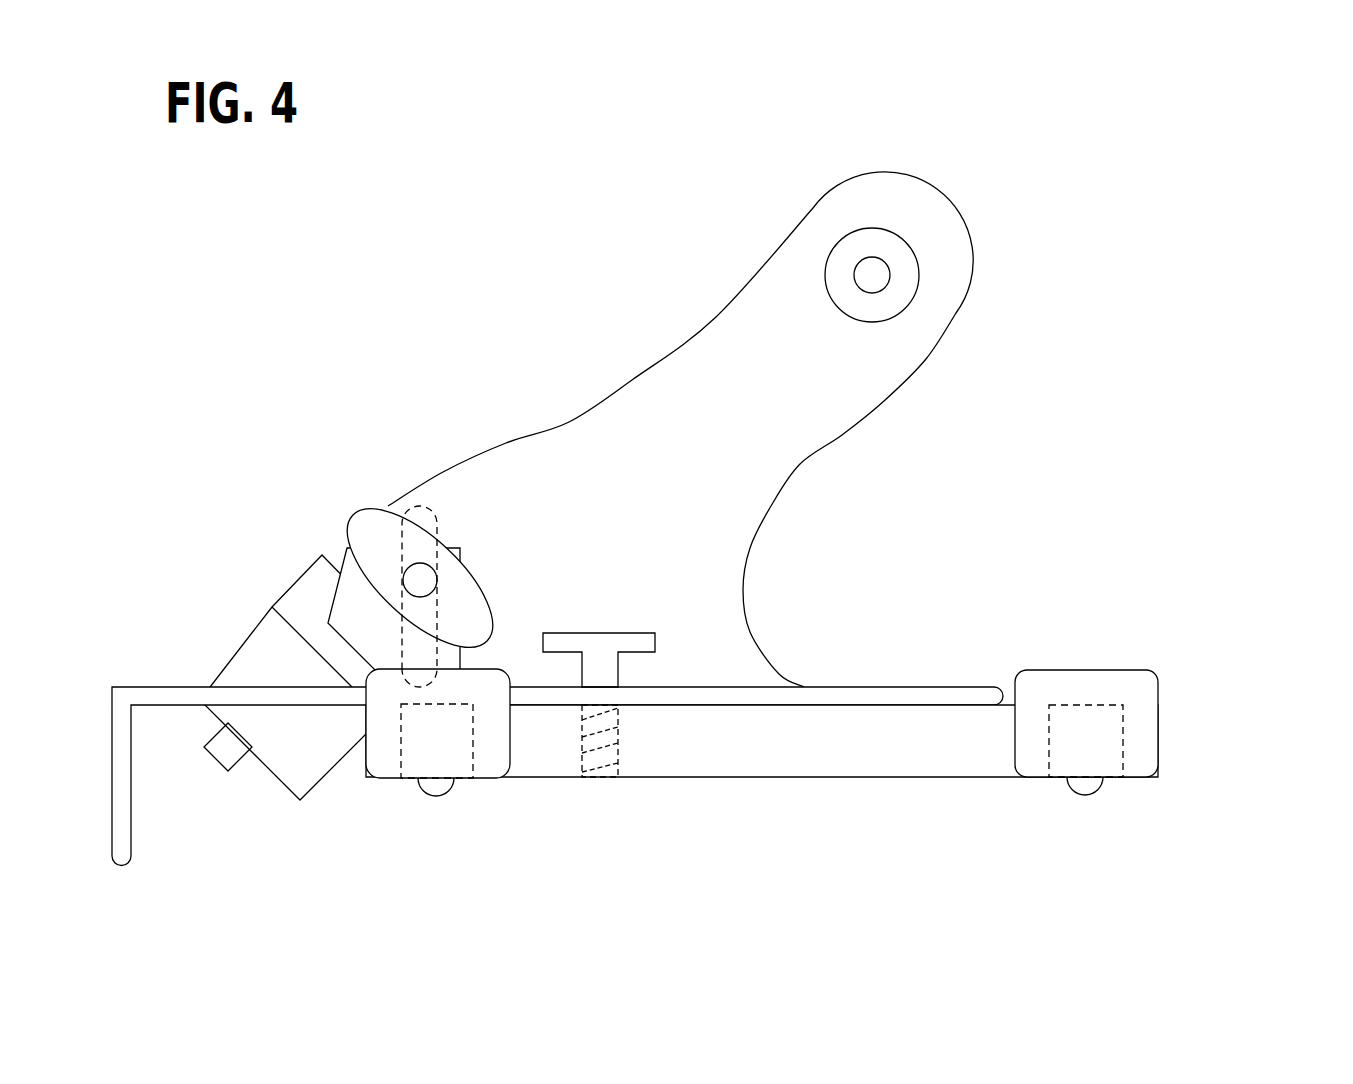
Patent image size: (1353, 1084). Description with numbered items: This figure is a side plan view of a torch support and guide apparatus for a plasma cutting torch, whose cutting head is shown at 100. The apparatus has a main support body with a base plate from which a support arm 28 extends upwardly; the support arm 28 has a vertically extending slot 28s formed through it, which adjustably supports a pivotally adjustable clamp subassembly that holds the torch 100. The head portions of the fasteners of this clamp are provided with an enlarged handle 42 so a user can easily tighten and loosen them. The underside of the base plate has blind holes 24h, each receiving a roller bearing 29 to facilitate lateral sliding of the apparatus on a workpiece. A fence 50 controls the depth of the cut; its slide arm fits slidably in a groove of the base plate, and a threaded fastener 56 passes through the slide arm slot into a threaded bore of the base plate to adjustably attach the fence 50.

The support arm 28 is at (703, 475).
The vertically extending slot 28s is at (445, 512).
The enlarged handle 42 is at (351, 489).
The threaded fastener 56 is at (598, 626).
The cutting head 100 is at (327, 811).
The fence 50 is at (149, 863).
The blind holes 24h is at (1107, 727).
The roller bearing 29 is at (1093, 798).